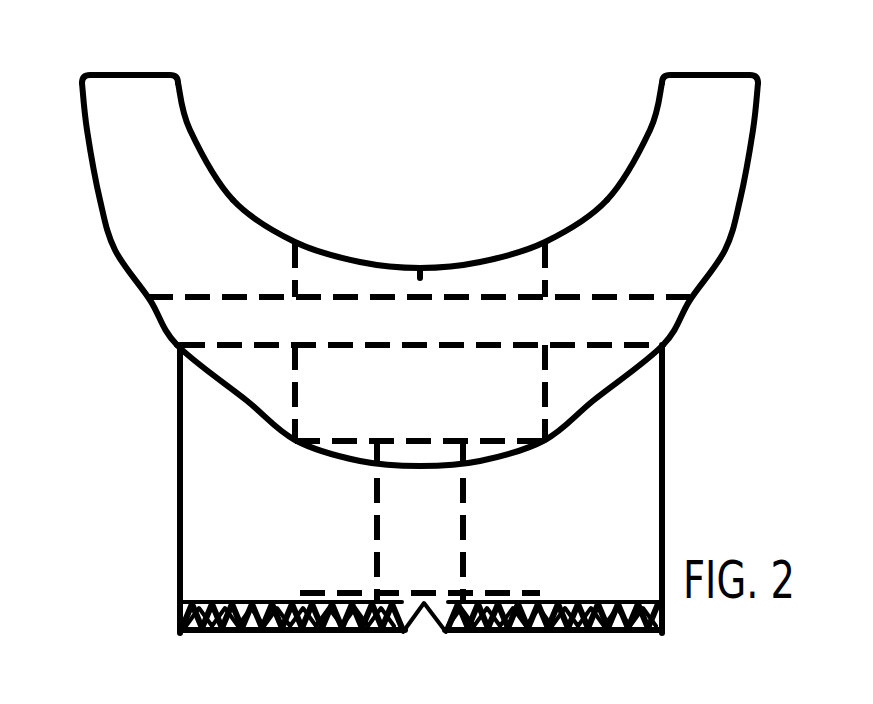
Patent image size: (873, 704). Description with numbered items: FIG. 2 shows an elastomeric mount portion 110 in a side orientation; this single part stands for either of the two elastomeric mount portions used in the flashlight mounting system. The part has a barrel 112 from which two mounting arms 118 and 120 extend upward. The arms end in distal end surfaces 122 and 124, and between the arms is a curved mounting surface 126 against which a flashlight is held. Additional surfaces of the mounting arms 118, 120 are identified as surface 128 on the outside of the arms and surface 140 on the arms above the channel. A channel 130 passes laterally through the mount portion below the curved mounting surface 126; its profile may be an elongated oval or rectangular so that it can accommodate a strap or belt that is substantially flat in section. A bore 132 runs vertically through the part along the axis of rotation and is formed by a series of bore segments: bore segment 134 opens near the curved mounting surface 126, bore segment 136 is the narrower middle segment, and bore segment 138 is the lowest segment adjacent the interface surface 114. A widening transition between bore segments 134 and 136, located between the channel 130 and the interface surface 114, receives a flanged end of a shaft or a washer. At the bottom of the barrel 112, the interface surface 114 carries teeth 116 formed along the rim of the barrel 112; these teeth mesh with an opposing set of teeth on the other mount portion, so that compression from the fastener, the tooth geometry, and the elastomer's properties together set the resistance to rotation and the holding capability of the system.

The elastomeric mount portion 110 is at (437, 358).
The barrel 112 is at (197, 482).
The interface surface 114 is at (552, 653).
The teeth 116 is at (402, 625).
The mounting arm 118 is at (113, 180).
The mounting arm 120 is at (712, 198).
The distal end surface 122 is at (130, 59).
The distal end surface 124 is at (713, 59).
The curved mounting surface 126 is at (238, 177).
The mounting arm surface 128 is at (102, 257).
The channel 130 is at (196, 323).
The bore 132 is at (448, 369).
The bore segment 134 is at (282, 268).
The bore segment 136 is at (362, 508).
The bore segment 138 is at (289, 589).
The mounting arm surface 140 is at (151, 251).